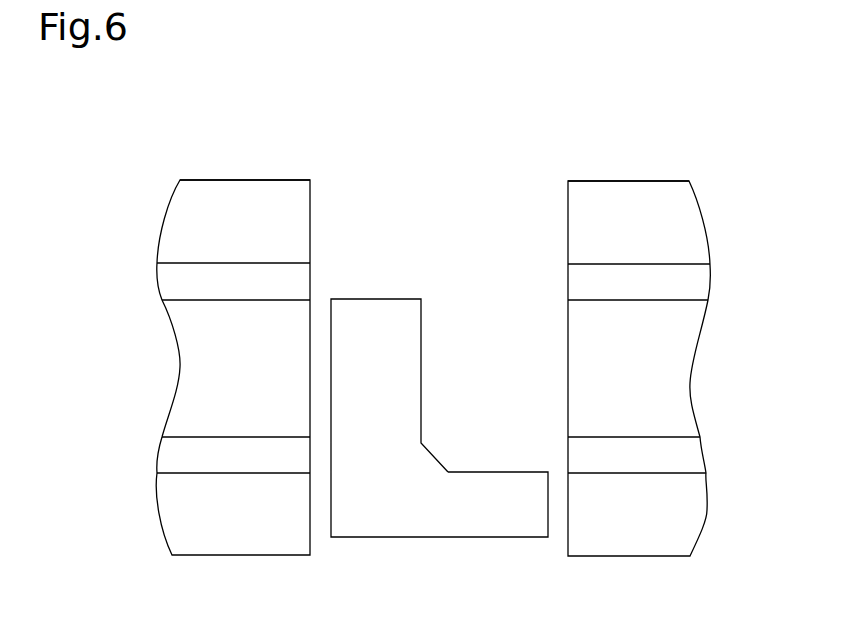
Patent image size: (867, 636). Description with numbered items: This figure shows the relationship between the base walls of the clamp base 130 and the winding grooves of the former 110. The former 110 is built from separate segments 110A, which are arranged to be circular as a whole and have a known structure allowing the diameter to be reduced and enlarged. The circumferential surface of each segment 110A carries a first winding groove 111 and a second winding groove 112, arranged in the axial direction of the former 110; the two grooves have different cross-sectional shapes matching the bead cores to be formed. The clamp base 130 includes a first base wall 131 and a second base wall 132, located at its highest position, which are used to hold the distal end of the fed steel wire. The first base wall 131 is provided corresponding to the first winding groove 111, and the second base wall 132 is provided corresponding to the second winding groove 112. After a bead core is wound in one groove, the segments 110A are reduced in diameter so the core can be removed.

The former 110 is at (692, 209).
The segment 110A is at (230, 190).
The first winding groove 111 is at (179, 263).
The second winding groove 112 is at (187, 437).
The clamp base 130 is at (439, 419).
The first base wall 131 is at (362, 298).
The second base wall 132 is at (487, 471).